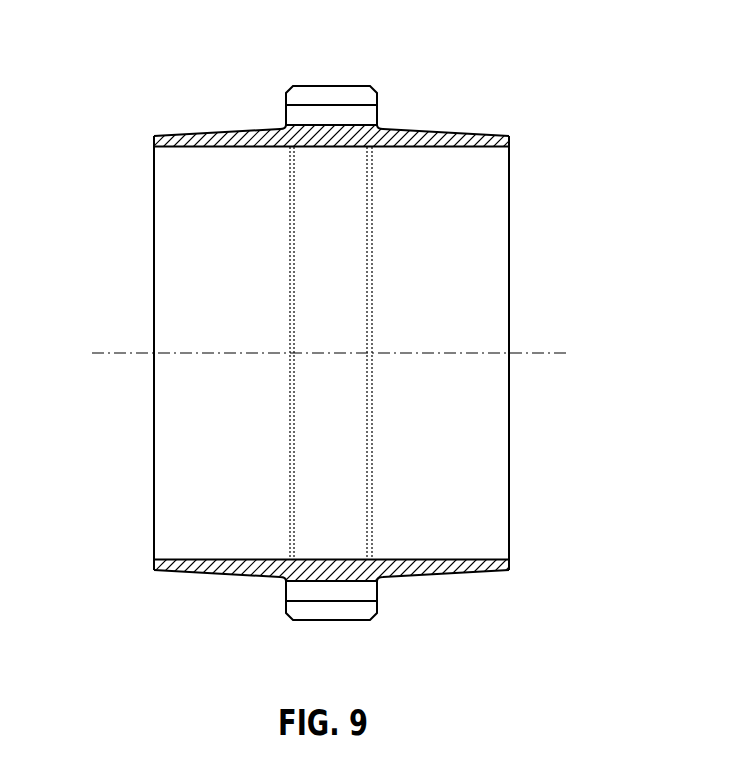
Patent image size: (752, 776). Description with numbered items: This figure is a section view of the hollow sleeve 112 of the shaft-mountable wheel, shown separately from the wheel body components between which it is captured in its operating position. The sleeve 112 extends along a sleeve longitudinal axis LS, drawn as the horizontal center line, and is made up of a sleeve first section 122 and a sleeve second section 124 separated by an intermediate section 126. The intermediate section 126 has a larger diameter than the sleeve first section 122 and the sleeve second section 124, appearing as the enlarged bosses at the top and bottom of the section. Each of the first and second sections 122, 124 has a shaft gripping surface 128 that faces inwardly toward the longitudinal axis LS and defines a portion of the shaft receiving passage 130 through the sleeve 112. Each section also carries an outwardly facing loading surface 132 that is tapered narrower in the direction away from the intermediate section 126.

The sleeve 112 is at (124, 248).
The sleeve first section 122 is at (510, 433).
The sleeve second section 124 is at (153, 438).
The intermediate section 126 is at (333, 86).
The shaft gripping surface 128 is at (208, 253).
The shaft receiving passage 130 is at (476, 297).
The loading surface 132 is at (218, 132).
The sleeve longitudinal axis LS is at (348, 355).